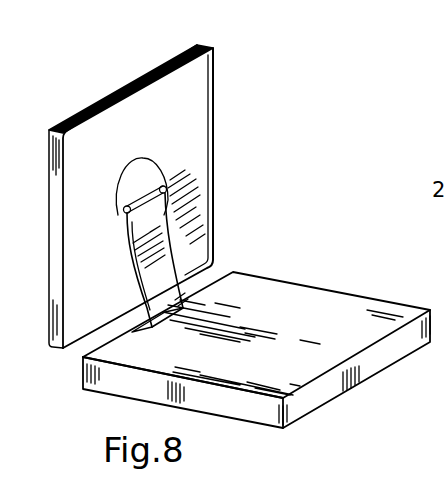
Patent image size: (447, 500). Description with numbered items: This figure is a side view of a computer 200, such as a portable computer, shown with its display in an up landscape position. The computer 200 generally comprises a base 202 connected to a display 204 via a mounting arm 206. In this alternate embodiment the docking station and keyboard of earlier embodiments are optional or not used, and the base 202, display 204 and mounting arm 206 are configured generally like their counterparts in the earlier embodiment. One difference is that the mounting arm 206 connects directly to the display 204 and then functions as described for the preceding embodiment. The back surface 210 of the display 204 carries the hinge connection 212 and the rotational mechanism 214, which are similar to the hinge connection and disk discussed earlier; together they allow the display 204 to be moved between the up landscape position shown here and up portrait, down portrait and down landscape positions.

The computer 200 is at (239, 228).
The base 202 is at (328, 326).
The display 204 is at (167, 188).
The mounting arm 206 is at (184, 236).
The back surface 210 is at (197, 143).
The hinge connection 212 is at (164, 170).
The rotational mechanism 214 is at (122, 210).